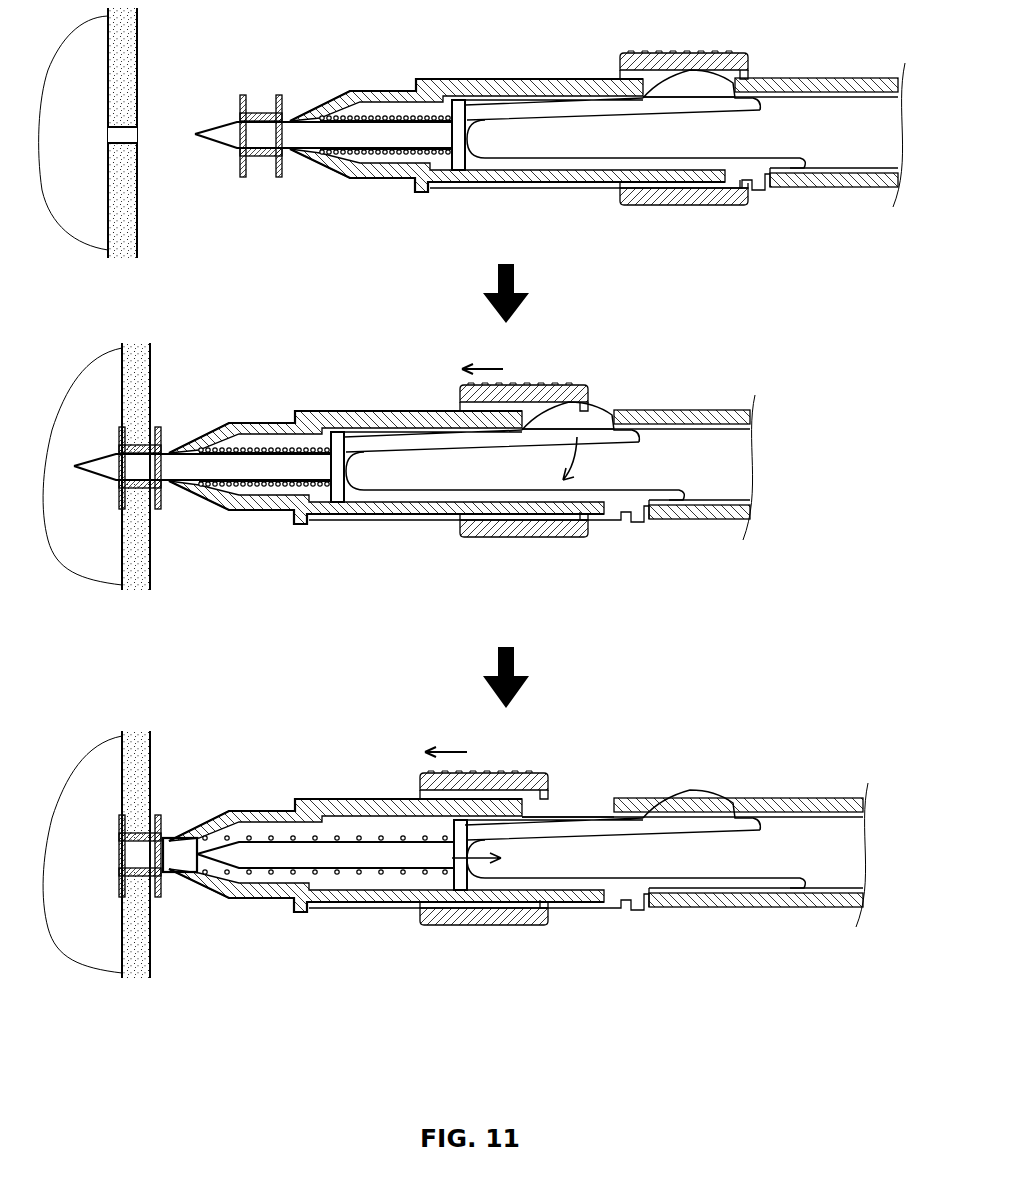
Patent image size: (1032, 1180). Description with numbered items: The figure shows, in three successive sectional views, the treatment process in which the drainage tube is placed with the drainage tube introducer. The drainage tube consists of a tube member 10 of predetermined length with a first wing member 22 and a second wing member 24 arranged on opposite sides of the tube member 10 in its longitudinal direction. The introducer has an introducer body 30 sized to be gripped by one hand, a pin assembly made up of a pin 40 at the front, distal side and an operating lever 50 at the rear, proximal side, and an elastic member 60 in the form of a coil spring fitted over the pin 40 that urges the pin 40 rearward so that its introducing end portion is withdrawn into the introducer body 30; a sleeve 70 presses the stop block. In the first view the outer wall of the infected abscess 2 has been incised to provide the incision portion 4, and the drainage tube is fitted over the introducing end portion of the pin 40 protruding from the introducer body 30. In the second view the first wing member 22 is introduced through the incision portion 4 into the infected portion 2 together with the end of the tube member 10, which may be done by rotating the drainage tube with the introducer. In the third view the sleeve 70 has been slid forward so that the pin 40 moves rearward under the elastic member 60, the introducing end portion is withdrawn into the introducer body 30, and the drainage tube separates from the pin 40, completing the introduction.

The infected abscess 2 is at (131, 173).
The incision portion 4 is at (136, 133).
The tube member 10 is at (260, 157).
The first wing member 22 is at (243, 95).
The second wing member 24 is at (279, 95).
The introducer body 30 is at (833, 88).
The pin 40 is at (329, 138).
The operating lever 50 is at (540, 115).
The elastic member 60 is at (392, 112).
The sleeve 70 is at (676, 205).